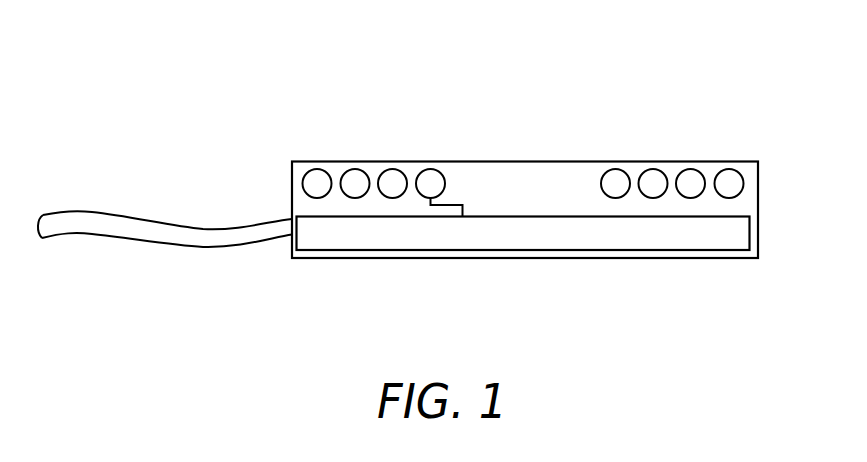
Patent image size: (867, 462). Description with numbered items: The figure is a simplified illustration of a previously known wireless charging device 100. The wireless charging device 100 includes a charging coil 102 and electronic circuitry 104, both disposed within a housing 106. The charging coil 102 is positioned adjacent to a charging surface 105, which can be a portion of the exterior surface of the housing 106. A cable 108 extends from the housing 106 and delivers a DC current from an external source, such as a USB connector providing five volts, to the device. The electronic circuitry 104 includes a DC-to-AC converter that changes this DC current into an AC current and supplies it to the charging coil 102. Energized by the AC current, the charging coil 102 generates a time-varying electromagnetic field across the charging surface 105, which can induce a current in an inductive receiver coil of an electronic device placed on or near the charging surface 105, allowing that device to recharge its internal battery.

The wireless charging device 100 is at (344, 83).
The charging coil 102 is at (733, 170).
The electronic circuitry 104 is at (528, 243).
The charging surface 105 is at (560, 160).
The housing 106 is at (557, 258).
The cable 108 is at (202, 246).